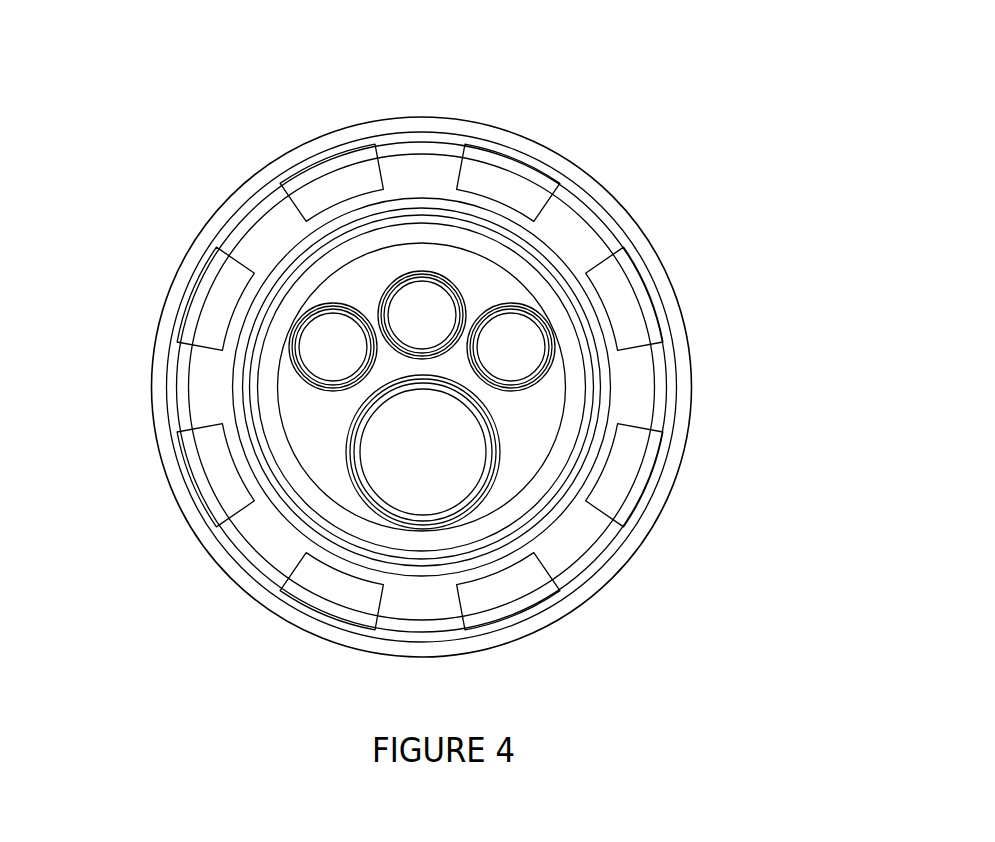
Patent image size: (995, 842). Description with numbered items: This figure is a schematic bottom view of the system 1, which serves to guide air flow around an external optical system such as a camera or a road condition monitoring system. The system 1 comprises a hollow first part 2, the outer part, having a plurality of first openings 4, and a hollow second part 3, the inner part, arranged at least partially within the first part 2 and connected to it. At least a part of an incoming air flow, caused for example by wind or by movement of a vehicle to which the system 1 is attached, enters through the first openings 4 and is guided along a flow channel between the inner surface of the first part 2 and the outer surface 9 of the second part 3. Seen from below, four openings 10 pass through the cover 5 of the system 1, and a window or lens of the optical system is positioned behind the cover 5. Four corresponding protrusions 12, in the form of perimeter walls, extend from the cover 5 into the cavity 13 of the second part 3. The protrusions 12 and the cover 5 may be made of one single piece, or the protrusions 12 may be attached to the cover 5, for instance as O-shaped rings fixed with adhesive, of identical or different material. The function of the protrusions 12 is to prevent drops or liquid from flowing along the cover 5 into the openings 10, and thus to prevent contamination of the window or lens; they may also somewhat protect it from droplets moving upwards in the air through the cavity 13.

The system 1 is at (603, 98).
The hollow first part 2 is at (692, 368).
The hollow second part 3 is at (293, 275).
The first openings 4 is at (220, 467).
The cover 5 is at (558, 390).
The outer surface of the second part 9 is at (552, 510).
The second openings 10 is at (316, 364).
The protrusions 12 is at (360, 493).
The cavity of the second part 13 is at (540, 438).